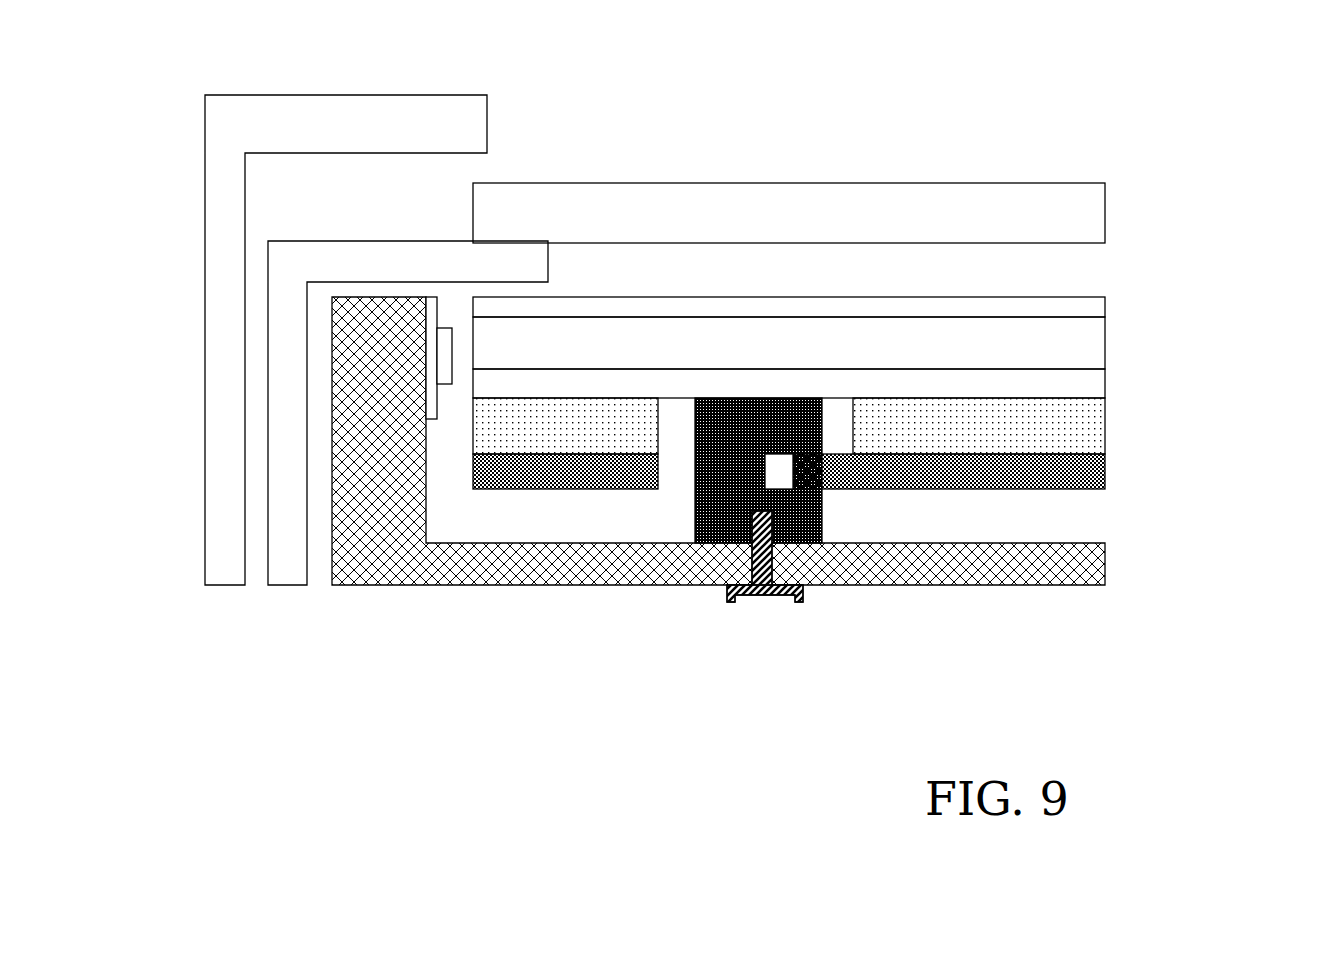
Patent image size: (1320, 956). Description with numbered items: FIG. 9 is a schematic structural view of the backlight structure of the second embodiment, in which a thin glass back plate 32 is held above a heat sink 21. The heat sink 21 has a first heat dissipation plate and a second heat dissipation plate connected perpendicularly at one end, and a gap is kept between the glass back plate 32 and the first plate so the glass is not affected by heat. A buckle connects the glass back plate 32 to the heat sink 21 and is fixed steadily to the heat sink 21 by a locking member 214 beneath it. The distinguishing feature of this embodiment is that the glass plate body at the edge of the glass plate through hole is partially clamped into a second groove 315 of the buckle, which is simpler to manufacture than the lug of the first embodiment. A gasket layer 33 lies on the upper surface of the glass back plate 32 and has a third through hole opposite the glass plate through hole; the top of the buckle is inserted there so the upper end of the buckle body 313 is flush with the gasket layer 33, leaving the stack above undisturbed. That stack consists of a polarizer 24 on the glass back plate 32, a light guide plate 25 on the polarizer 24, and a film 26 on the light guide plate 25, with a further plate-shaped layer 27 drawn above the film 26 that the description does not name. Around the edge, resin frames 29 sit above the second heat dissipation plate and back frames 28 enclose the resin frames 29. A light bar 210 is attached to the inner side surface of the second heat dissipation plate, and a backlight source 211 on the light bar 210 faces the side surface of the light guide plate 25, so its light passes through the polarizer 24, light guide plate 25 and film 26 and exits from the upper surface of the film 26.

The heat sink 21 is at (1105, 563).
The polarizer 24 is at (1105, 388).
The light guide plate 25 is at (1105, 350).
The film 26 is at (1080, 297).
The cover layer 27 is at (1080, 183).
The back frames 28 is at (280, 99).
The resin frames 29 is at (322, 240).
The light bar 210 is at (425, 348).
The backlight source 211 is at (438, 374).
The glass back plate 32 is at (1105, 470).
The gasket layer 33 is at (1105, 430).
The locking member 214 is at (752, 592).
The buckle body 313 is at (690, 487).
The second groove 315 is at (783, 473).